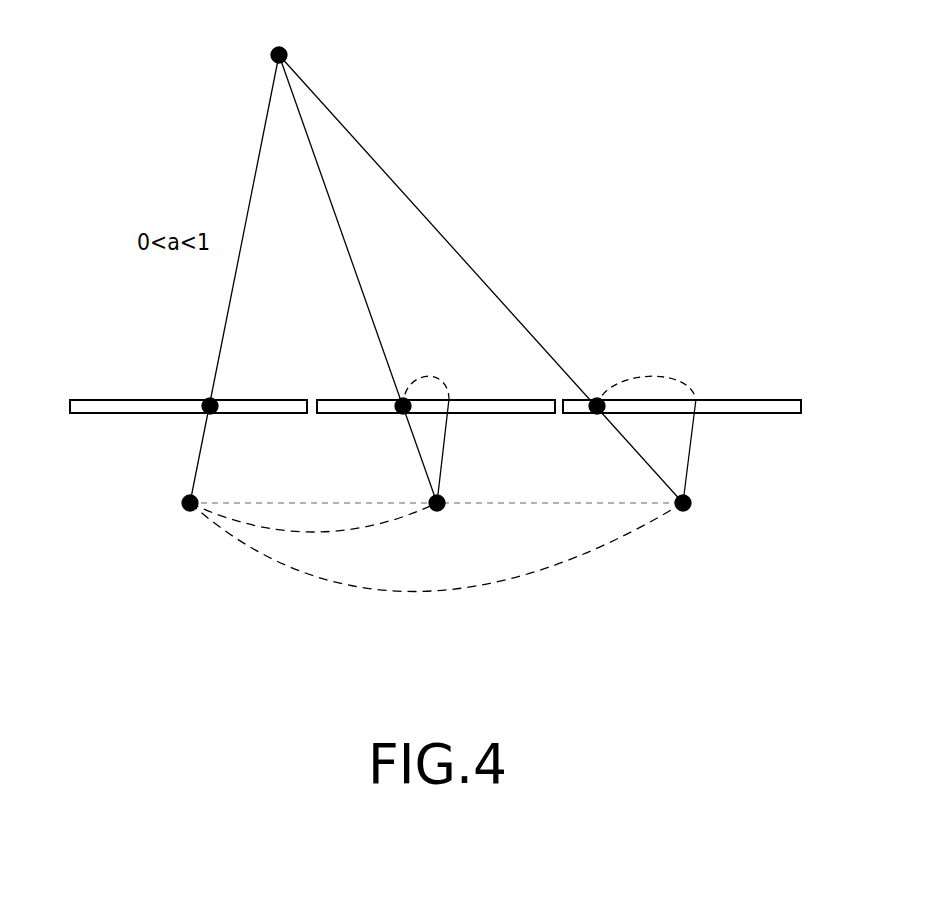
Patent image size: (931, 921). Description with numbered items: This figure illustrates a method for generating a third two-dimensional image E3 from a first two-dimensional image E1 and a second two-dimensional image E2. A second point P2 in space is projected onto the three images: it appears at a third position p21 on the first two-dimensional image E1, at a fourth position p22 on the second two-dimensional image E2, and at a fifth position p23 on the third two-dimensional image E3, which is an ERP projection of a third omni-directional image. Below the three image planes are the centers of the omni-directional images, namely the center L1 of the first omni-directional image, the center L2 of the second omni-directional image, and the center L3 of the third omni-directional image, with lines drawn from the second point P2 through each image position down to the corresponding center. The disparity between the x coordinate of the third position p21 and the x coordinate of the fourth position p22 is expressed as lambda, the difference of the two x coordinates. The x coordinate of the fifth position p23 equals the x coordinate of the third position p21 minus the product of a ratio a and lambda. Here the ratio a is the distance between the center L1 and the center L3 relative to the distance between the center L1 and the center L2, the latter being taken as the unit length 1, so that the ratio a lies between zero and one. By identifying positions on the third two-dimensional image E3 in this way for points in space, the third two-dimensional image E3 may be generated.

The second point P2 is at (277, 39).
The first 2D image E1 is at (106, 398).
The second 2D image E2 is at (757, 398).
The third 2D image E3 is at (351, 398).
The third position p21 is at (194, 420).
The fourth position p22 is at (588, 420).
The fifth position p23 is at (391, 420).
The center of the first omni-directional image L1 is at (189, 518).
The center of the second omni-directional image L2 is at (686, 518).
The center of the third omni-directional image L3 is at (439, 518).
The ratio a is at (313, 532).
The normalized distance between centers L1 and L2 1 is at (436, 564).